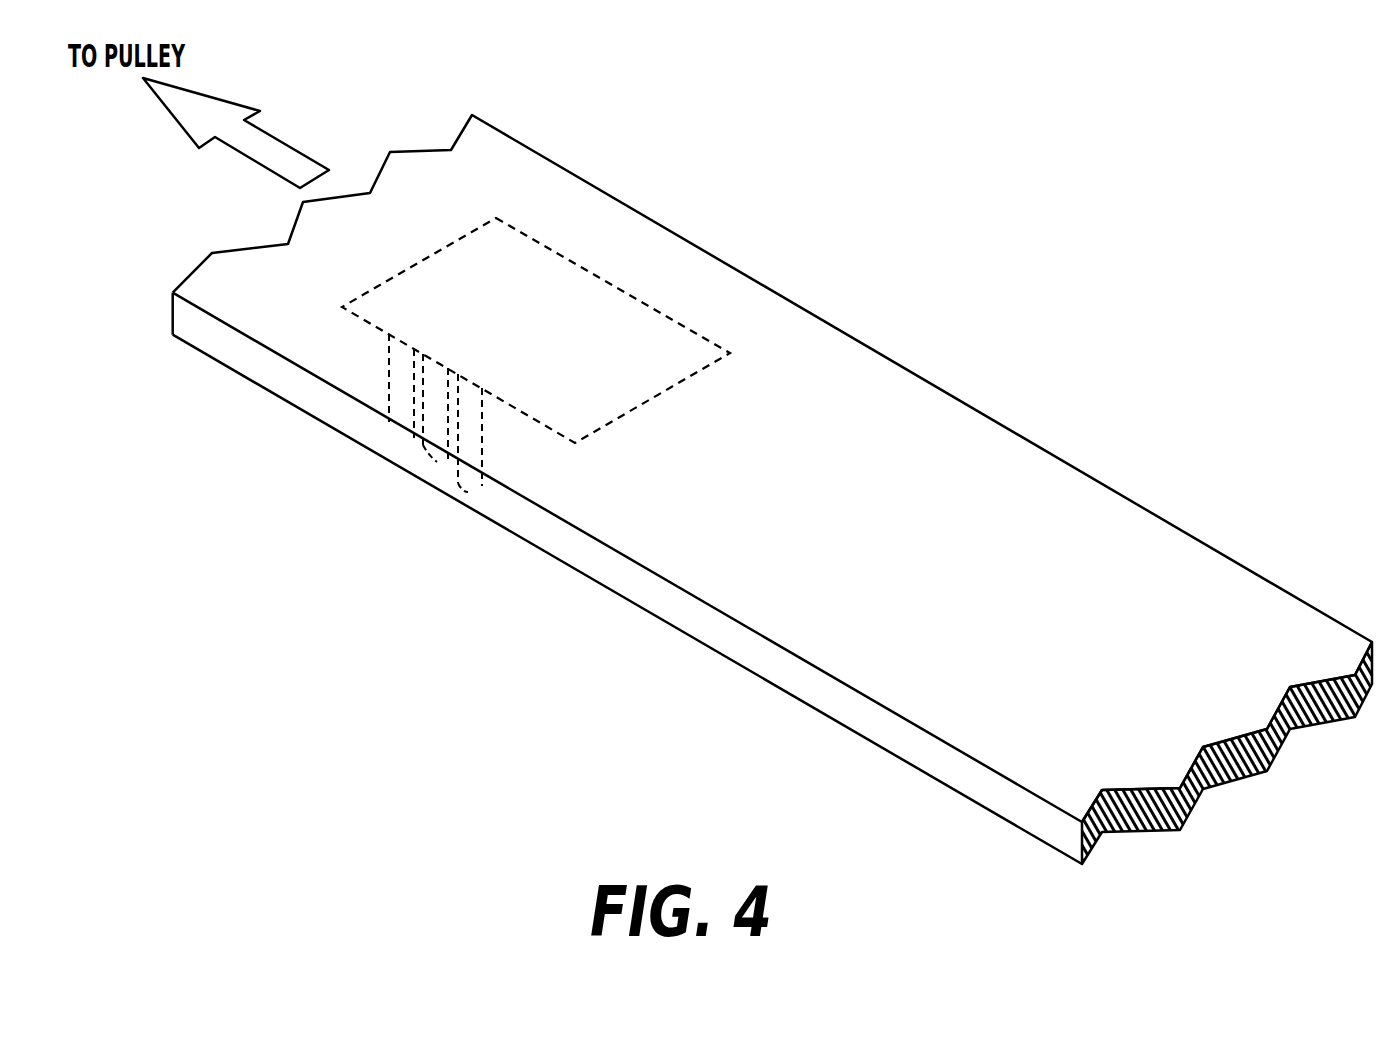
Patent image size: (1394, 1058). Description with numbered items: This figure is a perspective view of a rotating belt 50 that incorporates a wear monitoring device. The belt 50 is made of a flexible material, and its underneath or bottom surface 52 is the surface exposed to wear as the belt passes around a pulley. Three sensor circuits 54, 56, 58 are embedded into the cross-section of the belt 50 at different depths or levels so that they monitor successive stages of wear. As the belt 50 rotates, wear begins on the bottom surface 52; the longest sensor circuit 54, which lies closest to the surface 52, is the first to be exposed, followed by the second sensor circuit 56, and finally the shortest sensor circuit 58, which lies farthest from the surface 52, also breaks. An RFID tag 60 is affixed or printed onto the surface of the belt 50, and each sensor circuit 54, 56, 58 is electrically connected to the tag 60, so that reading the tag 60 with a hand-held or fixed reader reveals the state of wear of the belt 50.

The belt 50 is at (937, 570).
The bottom surface 52 is at (725, 597).
The sensor circuit 54 is at (468, 490).
The second sensor circuit 56 is at (447, 462).
The shortest sensor circuit 58 is at (406, 436).
The RFID tag 60 is at (672, 388).